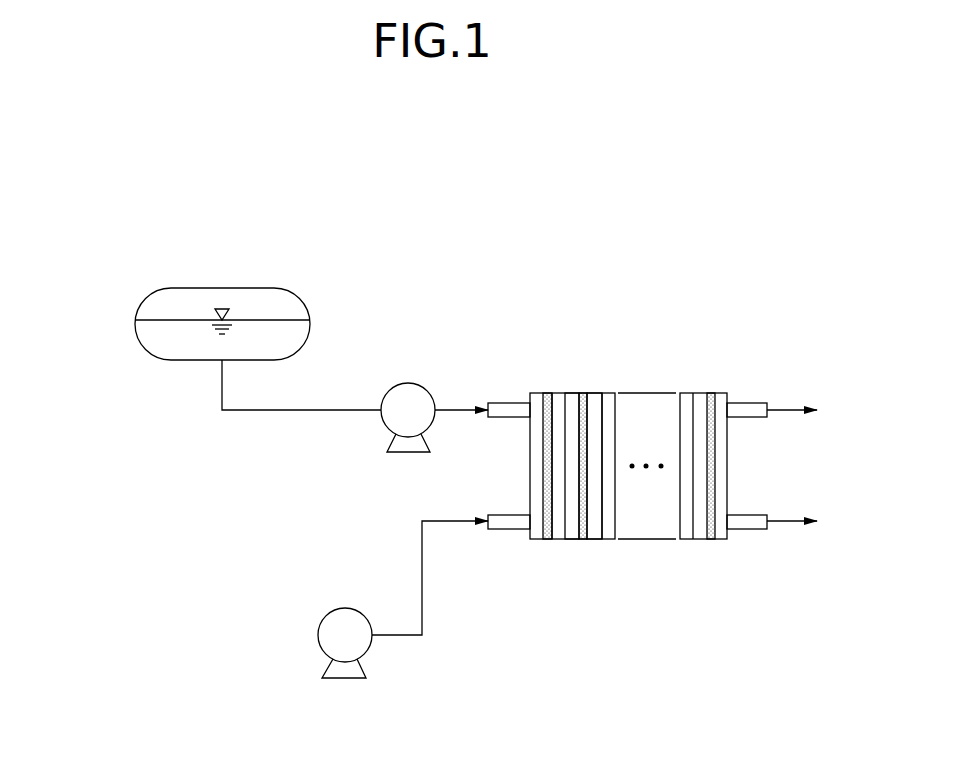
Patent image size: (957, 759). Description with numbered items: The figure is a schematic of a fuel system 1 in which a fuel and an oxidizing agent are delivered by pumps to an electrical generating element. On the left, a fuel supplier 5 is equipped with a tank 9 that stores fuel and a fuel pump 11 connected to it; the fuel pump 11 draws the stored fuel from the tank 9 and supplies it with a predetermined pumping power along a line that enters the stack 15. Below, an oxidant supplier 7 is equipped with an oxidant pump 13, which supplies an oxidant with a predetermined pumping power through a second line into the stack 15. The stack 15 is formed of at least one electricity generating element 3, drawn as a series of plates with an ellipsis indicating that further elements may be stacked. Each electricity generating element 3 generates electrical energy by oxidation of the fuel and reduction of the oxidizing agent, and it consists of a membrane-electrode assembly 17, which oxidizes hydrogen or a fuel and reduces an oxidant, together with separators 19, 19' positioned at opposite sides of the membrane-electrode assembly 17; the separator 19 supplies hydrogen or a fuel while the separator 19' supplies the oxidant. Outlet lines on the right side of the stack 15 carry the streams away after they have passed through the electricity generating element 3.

The fuel system 1 is at (610, 262).
The electricity generating element 3 is at (530, 622).
The fuel supplier 5 is at (112, 292).
The oxidant supplier 7 is at (300, 627).
The tank 9 is at (228, 288).
The fuel pump 11 is at (408, 383).
The oxidant pump 13 is at (345, 608).
The stack 15 is at (680, 374).
The membrane-electrode assembly 17 is at (583, 540).
The separator 19 is at (551, 504).
The separator 19' is at (616, 504).